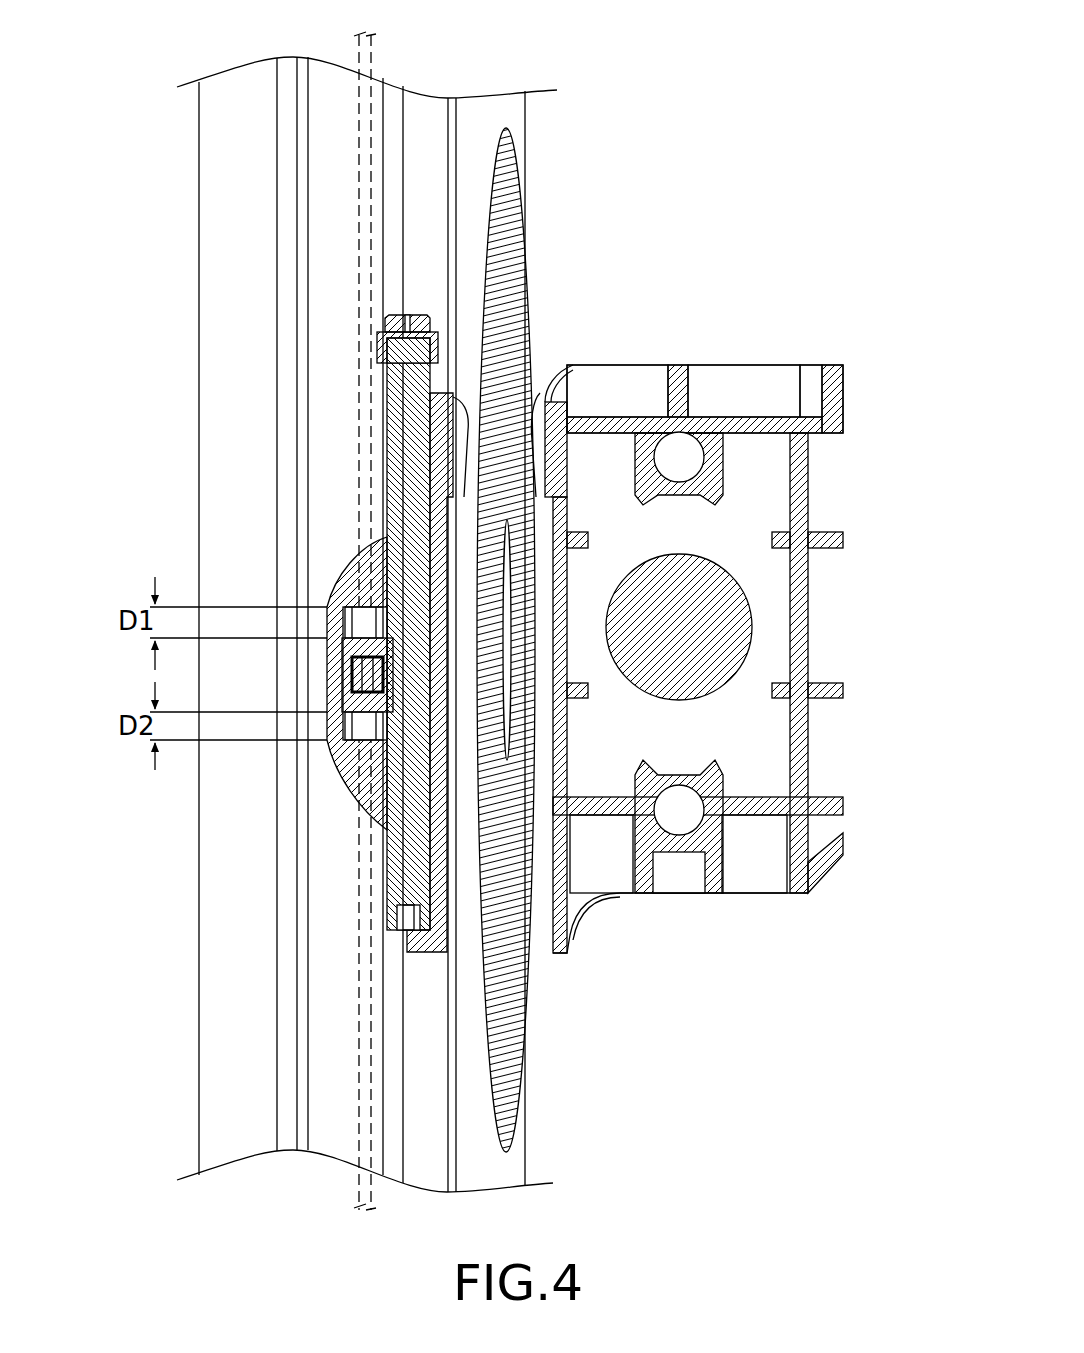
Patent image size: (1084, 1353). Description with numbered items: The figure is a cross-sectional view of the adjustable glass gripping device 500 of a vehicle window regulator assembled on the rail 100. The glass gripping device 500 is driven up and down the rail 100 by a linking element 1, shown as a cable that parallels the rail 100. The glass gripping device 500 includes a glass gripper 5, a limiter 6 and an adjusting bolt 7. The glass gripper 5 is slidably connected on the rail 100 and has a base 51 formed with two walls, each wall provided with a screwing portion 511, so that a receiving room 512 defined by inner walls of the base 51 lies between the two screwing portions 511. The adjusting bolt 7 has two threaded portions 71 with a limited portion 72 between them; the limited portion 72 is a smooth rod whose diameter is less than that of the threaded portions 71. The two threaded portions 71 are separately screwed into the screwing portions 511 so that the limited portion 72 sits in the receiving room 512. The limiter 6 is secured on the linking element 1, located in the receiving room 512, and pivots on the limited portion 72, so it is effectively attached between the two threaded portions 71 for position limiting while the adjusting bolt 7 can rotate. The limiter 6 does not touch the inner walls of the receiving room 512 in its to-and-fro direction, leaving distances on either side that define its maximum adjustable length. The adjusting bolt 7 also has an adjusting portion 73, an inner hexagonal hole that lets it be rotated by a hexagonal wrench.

The rail 100 is at (194, 158).
The linking element 1 is at (357, 97).
The glass gripping device 500 is at (540, 27).
The glass gripper 5 is at (577, 612).
The base 51 is at (808, 478).
The screwing portion 511 is at (385, 530).
The receiving room 512 is at (351, 603).
The limiter 6 is at (333, 657).
The adjusting bolt 7 is at (392, 608).
The threaded portion 71 is at (385, 408).
The limited portion 72 is at (350, 690).
The adjusting portion 73 is at (405, 917).